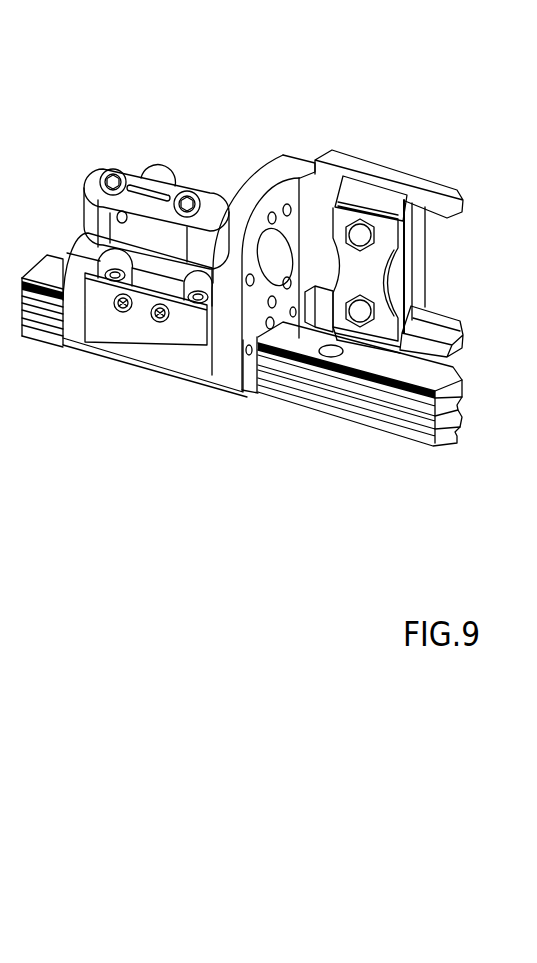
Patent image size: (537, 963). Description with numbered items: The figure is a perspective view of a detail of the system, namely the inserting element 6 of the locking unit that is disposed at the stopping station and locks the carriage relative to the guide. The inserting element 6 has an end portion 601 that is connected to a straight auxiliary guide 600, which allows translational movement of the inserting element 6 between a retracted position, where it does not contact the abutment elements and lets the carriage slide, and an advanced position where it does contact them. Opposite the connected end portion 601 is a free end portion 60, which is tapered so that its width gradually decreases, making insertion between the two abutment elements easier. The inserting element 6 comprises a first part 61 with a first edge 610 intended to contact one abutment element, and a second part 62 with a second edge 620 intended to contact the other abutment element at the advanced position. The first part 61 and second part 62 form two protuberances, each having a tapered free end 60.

The inserting element 6 is at (265, 125).
The free end portion 60 is at (436, 184).
The first part 61 is at (375, 164).
The second part 62 is at (383, 353).
The auxiliary guide 600 is at (38, 316).
The end portion 601 is at (103, 138).
The first edge 610 is at (405, 155).
The second edge 620 is at (324, 348).